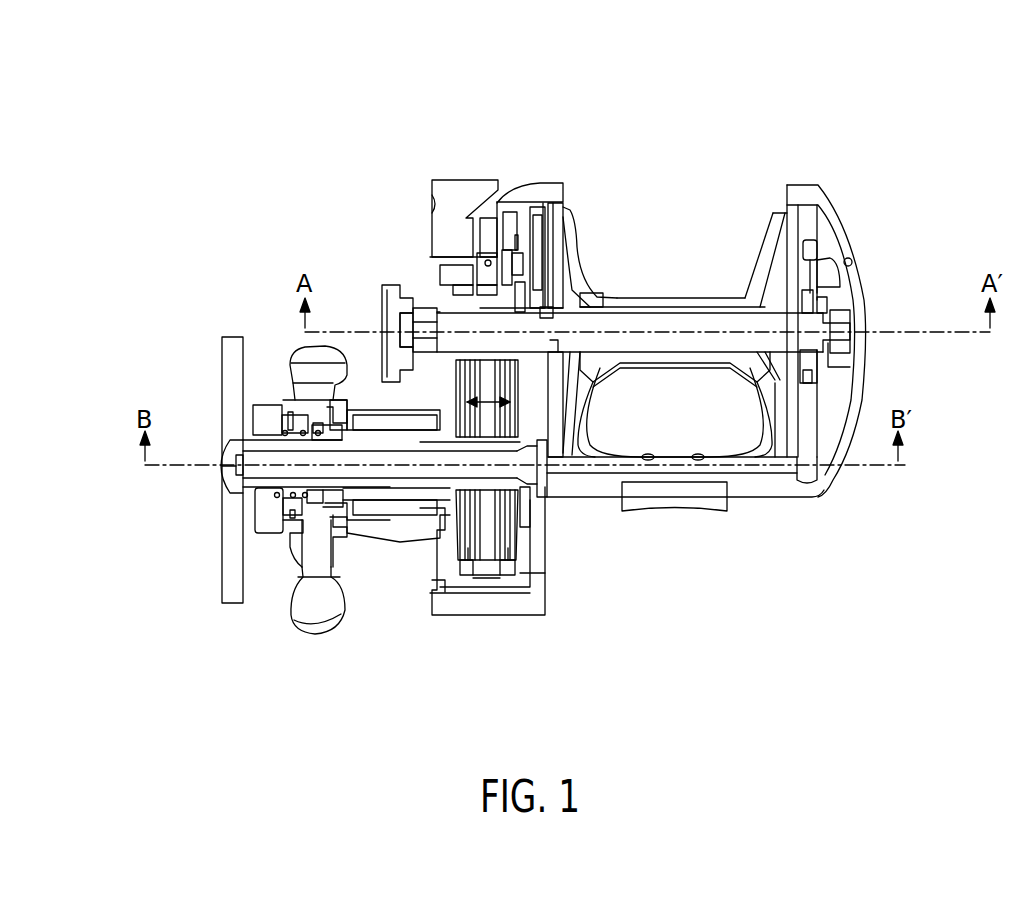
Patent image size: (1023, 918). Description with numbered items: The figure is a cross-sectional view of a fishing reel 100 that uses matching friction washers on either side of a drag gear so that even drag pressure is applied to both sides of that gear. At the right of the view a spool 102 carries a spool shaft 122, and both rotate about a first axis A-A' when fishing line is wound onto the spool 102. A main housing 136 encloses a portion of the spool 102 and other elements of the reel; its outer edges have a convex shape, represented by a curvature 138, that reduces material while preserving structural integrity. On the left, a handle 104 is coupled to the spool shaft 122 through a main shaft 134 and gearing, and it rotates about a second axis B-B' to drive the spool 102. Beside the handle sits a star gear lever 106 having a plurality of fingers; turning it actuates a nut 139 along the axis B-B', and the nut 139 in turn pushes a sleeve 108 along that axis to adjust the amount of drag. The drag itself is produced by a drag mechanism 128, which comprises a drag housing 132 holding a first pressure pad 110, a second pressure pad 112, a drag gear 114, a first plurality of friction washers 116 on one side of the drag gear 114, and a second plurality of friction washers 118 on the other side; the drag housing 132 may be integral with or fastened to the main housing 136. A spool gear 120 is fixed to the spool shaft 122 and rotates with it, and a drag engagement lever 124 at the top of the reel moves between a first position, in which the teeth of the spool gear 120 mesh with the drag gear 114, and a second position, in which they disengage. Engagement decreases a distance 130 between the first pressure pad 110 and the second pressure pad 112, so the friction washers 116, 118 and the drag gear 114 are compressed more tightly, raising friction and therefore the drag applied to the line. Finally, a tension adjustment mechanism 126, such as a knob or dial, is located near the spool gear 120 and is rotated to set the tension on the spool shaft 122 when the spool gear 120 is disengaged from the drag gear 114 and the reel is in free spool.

The fishing reel 100 is at (752, 106).
The spool 102 is at (685, 285).
The handle 104 is at (222, 350).
The star gear lever 106 is at (328, 625).
The sleeve 108 is at (382, 503).
The first pressure pad 110 is at (440, 583).
The second pressure pad 112 is at (537, 582).
The drag gear 114 is at (483, 578).
The first plurality of friction washers 116 is at (468, 578).
The second plurality of friction washers 118 is at (508, 578).
The spool gear 120 is at (470, 312).
The spool shaft 122 is at (618, 327).
The drag engagement lever 124 is at (452, 193).
The tension adjustment mechanism 126 is at (385, 292).
The drag mechanism 128 is at (535, 538).
The distance 130 is at (470, 400).
The drag housing 132 is at (542, 560).
The main shaft 134 is at (285, 470).
The main housing 136 is at (837, 215).
The curvature 138 is at (852, 263).
The nut 139 is at (322, 428).